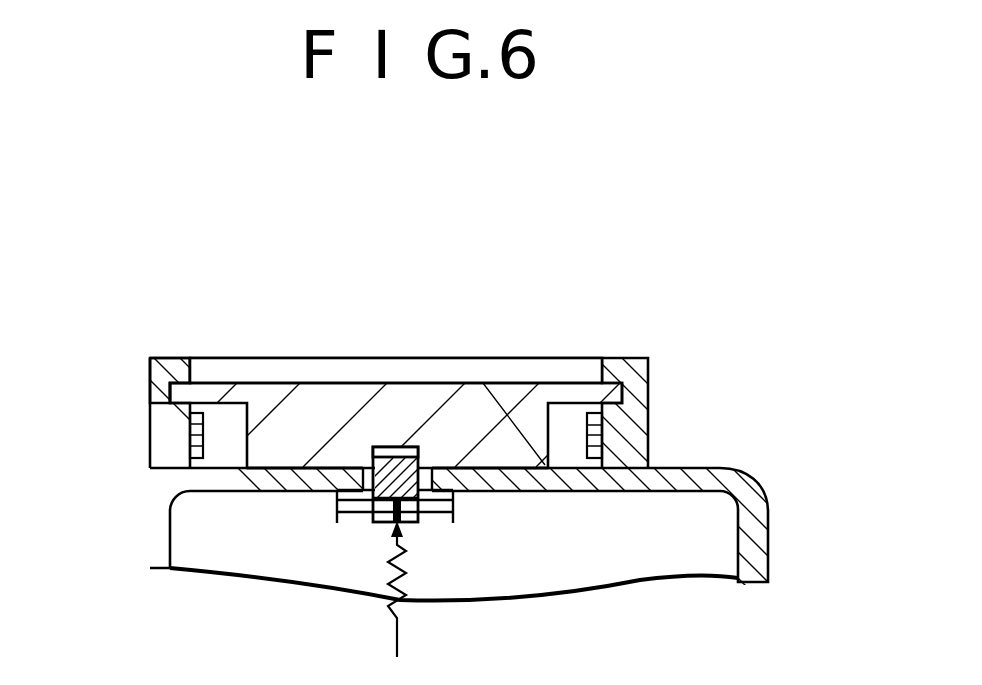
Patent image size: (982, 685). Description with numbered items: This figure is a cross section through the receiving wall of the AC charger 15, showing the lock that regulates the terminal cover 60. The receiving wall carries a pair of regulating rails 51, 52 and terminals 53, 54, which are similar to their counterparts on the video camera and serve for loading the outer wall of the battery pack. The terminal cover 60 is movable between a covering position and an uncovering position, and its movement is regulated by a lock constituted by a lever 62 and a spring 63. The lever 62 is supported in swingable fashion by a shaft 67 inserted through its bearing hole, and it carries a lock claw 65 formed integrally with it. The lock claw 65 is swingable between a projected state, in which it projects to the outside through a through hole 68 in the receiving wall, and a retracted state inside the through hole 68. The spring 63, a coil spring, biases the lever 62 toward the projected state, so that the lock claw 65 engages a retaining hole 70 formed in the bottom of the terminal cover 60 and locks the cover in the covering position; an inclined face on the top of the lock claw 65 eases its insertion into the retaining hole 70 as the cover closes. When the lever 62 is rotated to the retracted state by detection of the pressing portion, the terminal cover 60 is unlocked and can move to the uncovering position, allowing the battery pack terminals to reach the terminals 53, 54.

The AC charger 15 is at (797, 519).
The regulating rail 51 is at (630, 377).
The regulating rail 52 is at (163, 377).
The terminal 53 is at (602, 434).
The terminal 54 is at (190, 441).
The terminal cover 60 is at (433, 393).
The lever 62 is at (445, 528).
The spring 63 is at (413, 570).
The lock claw 65 is at (373, 463).
The shaft 67 is at (338, 498).
The through hole 68 is at (447, 465).
The retaining hole 70 is at (386, 447).